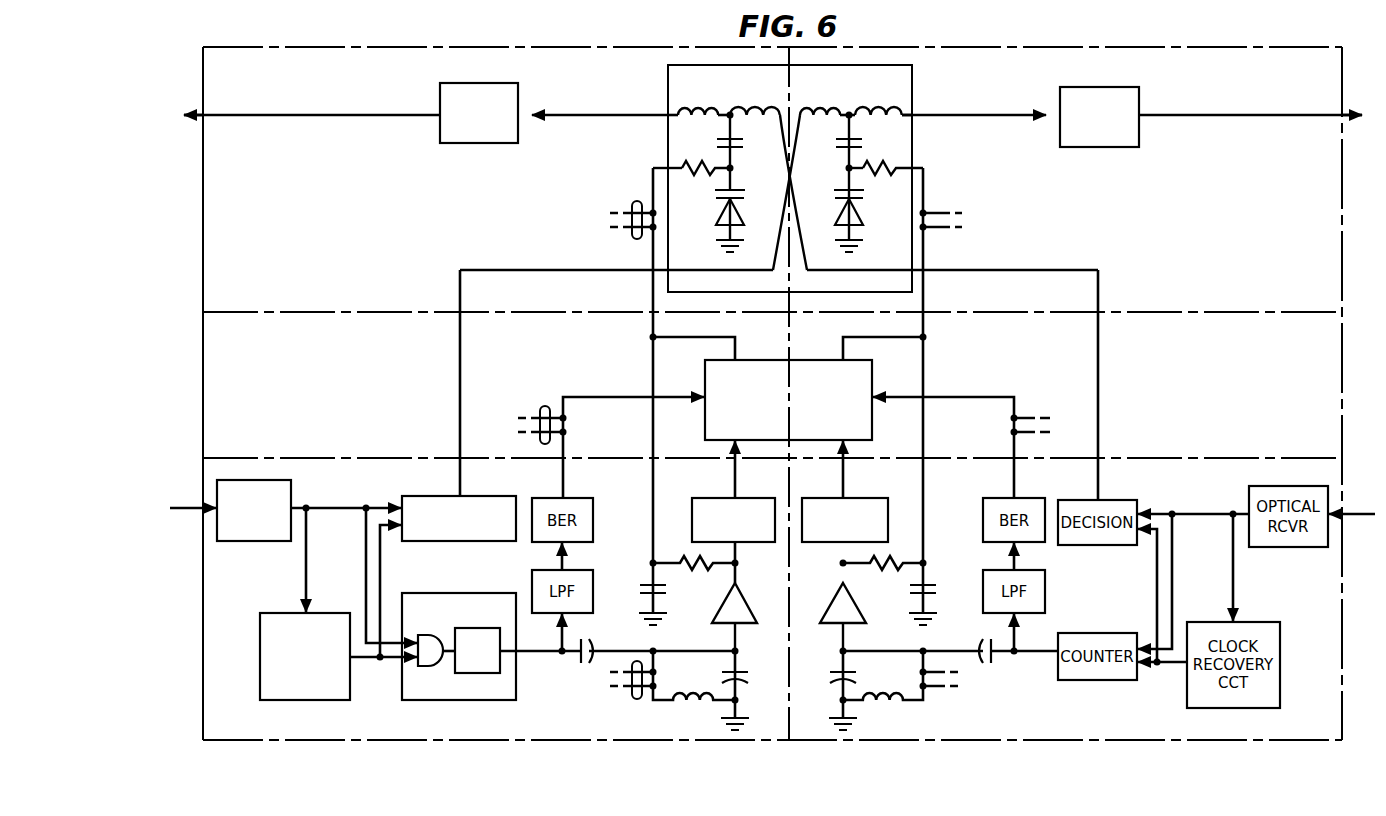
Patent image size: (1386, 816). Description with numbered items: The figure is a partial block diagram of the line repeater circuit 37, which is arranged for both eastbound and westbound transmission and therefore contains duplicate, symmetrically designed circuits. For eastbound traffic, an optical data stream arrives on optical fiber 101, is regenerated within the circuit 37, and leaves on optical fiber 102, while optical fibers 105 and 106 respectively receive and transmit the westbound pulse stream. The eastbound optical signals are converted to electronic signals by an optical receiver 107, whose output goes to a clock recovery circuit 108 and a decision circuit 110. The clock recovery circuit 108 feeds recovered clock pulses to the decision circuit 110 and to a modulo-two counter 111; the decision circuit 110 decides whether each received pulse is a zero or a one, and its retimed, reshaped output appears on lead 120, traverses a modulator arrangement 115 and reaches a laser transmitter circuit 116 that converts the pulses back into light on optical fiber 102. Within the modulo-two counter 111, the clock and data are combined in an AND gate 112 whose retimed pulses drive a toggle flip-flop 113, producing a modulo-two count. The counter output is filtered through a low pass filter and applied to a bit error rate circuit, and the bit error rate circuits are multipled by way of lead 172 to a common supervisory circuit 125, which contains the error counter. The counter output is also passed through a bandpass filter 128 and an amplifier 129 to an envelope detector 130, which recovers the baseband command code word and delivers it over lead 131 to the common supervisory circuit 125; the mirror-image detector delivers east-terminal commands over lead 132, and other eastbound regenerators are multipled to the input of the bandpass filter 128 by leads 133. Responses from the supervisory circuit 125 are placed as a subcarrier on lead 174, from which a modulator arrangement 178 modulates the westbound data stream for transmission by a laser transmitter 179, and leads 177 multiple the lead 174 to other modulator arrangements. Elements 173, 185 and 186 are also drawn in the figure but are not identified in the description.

The line repeater circuit 37 is at (772, 393).
The optical fiber 101 is at (189, 508).
The optical fiber 102 is at (1358, 114).
The optical fiber 105 is at (1359, 513).
The optical fiber 106 is at (190, 114).
The optical receiver 107 is at (259, 544).
The clock recovery circuit 108 is at (260, 657).
The decision circuit 110 is at (441, 498).
The modulo-2 counter 111 is at (441, 593).
The AND gate 112 is at (432, 666).
The toggle flip-flop 113 is at (470, 673).
The modulator arrangement 115 is at (848, 169).
The laser transmitter circuit 116 is at (1100, 86).
The lead 120 is at (460, 480).
The common supervisory circuit 125 is at (812, 360).
The bandpass filter 128 is at (798, 643).
The amplifier 129 is at (712, 606).
The detector 130 is at (740, 542).
The lead 131 is at (732, 486).
The lead 132 is at (843, 486).
The leads 133 is at (637, 700).
The lead 172 is at (578, 396).
The connector 173 is at (550, 408).
The lead 174 is at (652, 330).
The leads 177 is at (636, 198).
The modulator arrangement 178 is at (730, 169).
The laser transmitter 179 is at (476, 86).
The zener diode 185 is at (716, 210).
The capacitor 186 is at (718, 122).